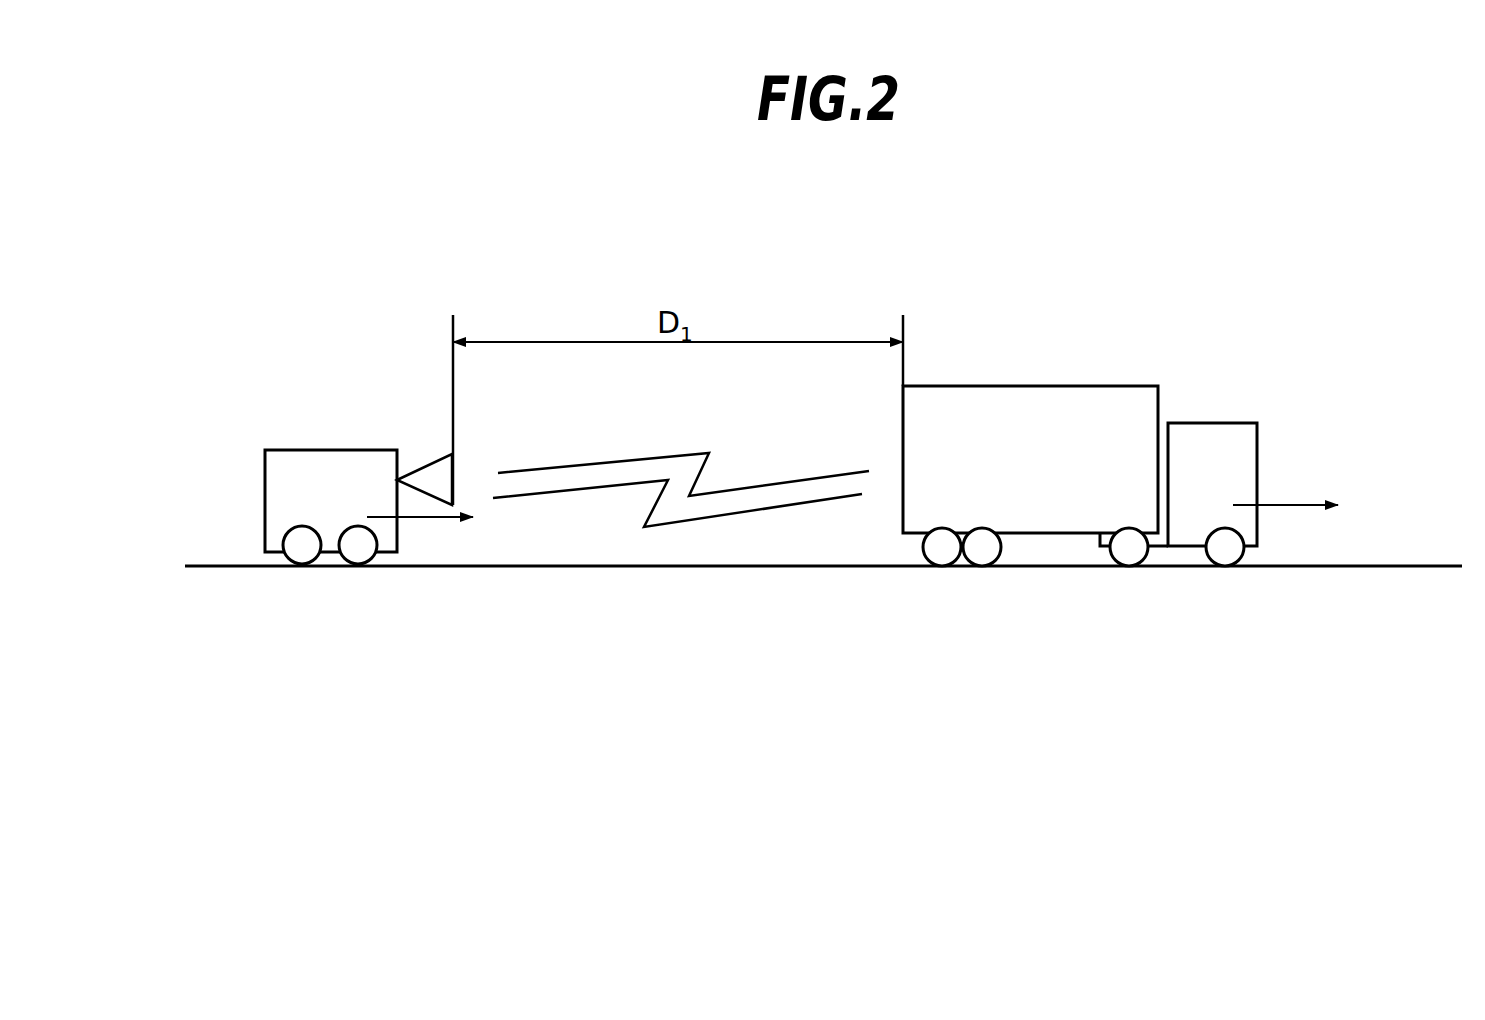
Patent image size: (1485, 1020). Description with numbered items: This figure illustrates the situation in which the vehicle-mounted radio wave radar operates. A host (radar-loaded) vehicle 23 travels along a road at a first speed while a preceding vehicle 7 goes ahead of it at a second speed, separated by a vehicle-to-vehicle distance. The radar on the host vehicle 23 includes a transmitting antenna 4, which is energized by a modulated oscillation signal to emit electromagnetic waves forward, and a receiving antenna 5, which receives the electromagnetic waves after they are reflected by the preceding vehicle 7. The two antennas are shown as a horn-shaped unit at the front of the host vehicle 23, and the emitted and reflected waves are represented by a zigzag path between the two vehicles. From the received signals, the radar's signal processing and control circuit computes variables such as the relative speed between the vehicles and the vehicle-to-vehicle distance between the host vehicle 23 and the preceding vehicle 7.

The host (radar-loaded) vehicle 23 is at (275, 512).
The transmitting antenna 4 is at (414, 432).
The receiving antenna 5 is at (425, 462).
The preceding vehicle 7 is at (1047, 522).